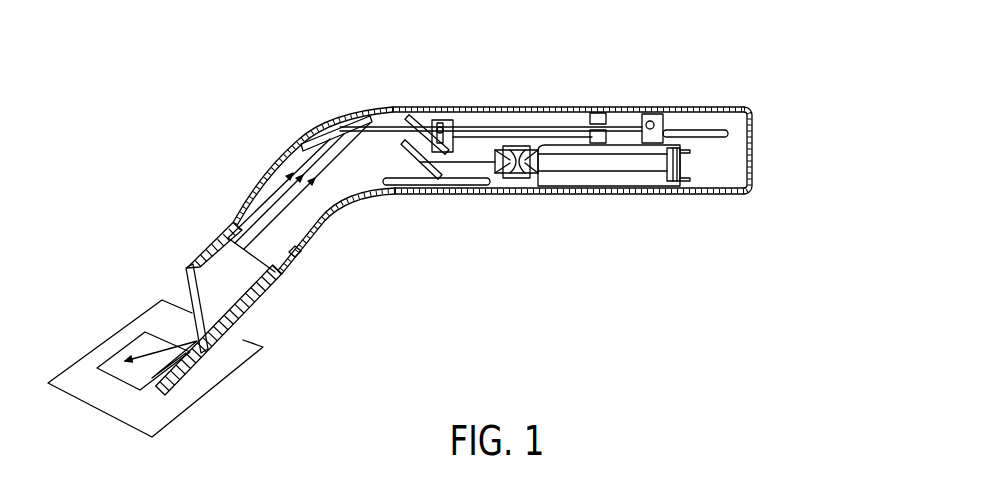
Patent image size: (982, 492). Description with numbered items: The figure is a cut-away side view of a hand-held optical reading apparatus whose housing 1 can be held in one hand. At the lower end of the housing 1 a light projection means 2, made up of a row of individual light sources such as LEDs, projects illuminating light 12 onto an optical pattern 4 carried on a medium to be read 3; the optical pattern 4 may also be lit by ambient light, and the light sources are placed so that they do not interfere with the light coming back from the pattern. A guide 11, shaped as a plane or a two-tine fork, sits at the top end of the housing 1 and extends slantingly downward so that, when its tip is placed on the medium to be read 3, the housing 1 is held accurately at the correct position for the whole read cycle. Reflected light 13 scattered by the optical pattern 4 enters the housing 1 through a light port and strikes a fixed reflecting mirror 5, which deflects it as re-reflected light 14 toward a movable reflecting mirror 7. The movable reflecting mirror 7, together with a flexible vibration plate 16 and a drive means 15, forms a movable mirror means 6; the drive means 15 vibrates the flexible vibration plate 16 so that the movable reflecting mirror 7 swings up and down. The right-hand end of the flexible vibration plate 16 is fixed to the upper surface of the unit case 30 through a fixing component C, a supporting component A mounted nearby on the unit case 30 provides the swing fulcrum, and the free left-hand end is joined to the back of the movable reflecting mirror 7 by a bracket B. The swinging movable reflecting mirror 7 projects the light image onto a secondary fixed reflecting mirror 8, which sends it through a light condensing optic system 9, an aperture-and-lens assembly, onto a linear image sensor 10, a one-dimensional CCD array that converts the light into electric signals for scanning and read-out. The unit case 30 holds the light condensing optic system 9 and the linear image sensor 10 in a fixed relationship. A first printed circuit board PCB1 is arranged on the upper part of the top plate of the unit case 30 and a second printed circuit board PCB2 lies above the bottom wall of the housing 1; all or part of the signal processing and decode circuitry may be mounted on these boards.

The housing 1 is at (481, 107).
The light projection means 2 is at (215, 323).
The medium to be read 3 is at (168, 427).
The optical pattern 4 is at (118, 347).
The fixed reflecting mirror 5 is at (323, 122).
The movable mirror means 6 is at (551, 123).
The movable reflecting mirror 7 is at (426, 114).
The secondary fixed reflecting mirror 8 is at (404, 188).
The light condensing optic system 9 is at (521, 180).
The linear image sensor 10 is at (705, 190).
The guide 11 is at (180, 380).
The illuminating light 12 is at (133, 360).
The reflected light 13 is at (185, 297).
The re-reflected light 14 is at (382, 107).
The drive means 15 is at (626, 122).
The flexible vibration plate 16 is at (530, 107).
The unit case 30 is at (633, 188).
The supporting component A is at (600, 113).
The bracket B is at (445, 118).
The fixing component C is at (675, 108).
The first printed circuit board PCB1 is at (720, 107).
The second printed circuit board PCB2 is at (457, 188).